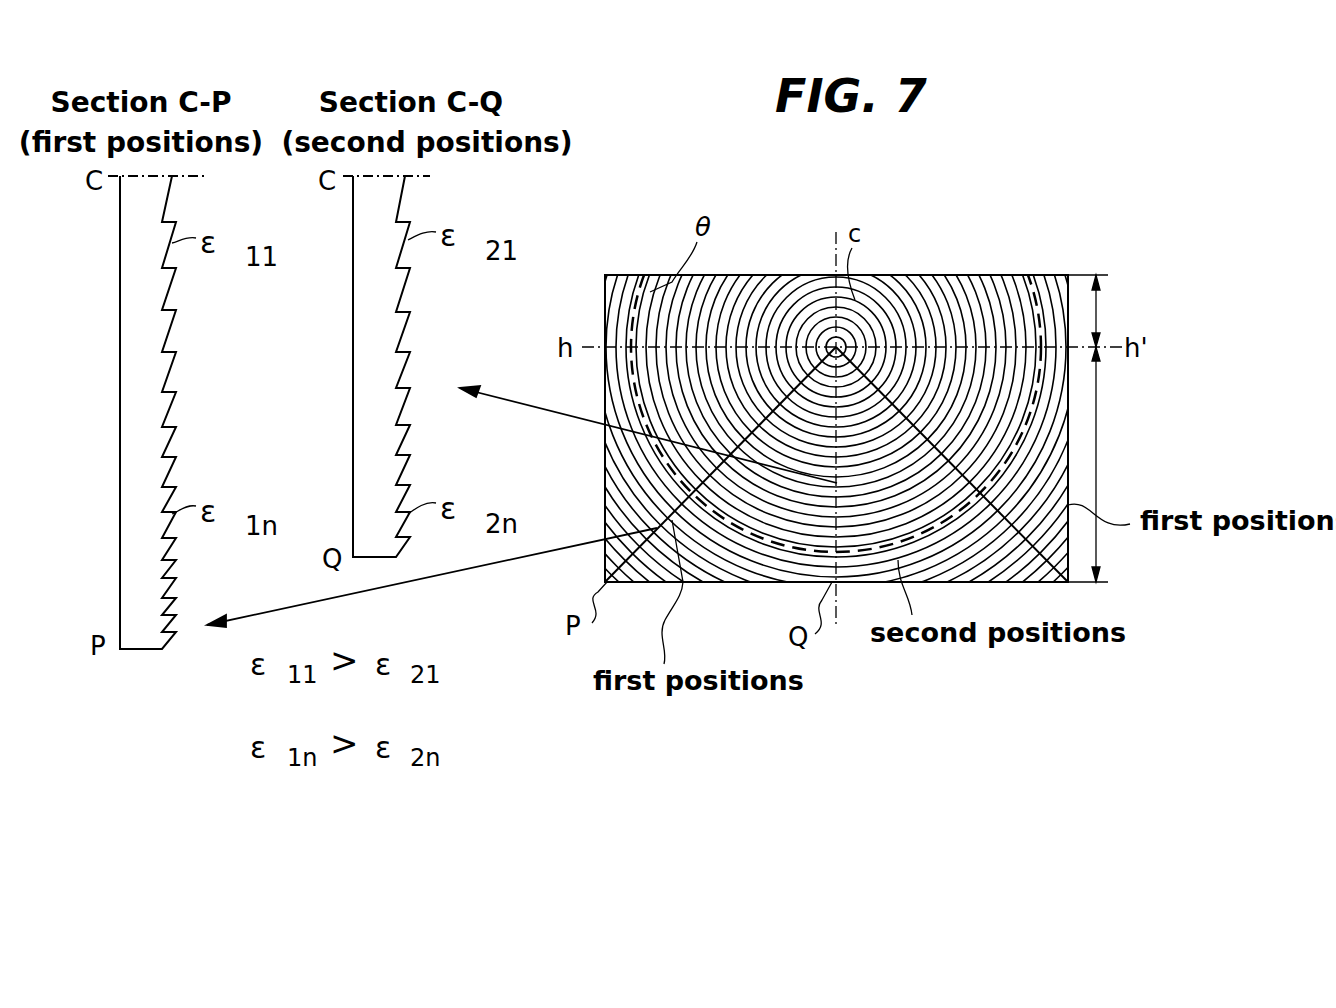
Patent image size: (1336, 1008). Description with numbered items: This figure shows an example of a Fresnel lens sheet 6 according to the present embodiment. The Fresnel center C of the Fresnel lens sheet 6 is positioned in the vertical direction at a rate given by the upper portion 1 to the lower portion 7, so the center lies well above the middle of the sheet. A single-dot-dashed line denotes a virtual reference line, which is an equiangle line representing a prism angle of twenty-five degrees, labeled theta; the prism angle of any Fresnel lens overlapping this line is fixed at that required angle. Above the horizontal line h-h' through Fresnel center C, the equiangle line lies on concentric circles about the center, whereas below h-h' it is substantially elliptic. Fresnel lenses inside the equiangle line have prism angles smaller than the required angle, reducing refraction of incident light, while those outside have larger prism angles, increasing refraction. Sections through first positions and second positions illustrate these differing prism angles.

The Fresnel lens sheet 6 is at (960, 278).
The upper vertical portion of the Fresnel lens sheet 1 is at (1106, 311).
The lower vertical portion of the Fresnel lens sheet 7 is at (1106, 464).